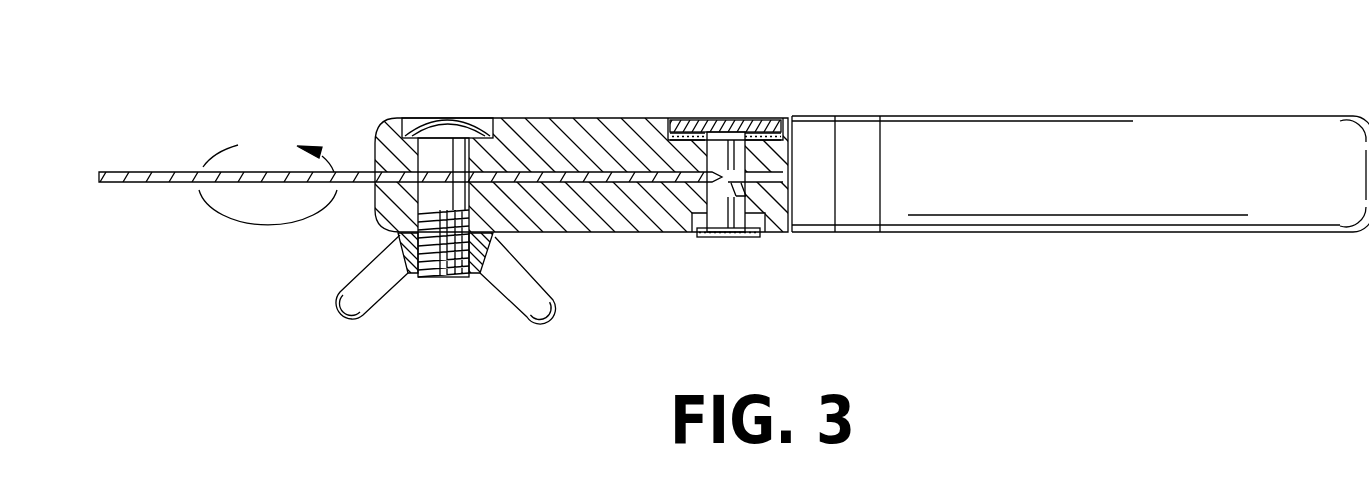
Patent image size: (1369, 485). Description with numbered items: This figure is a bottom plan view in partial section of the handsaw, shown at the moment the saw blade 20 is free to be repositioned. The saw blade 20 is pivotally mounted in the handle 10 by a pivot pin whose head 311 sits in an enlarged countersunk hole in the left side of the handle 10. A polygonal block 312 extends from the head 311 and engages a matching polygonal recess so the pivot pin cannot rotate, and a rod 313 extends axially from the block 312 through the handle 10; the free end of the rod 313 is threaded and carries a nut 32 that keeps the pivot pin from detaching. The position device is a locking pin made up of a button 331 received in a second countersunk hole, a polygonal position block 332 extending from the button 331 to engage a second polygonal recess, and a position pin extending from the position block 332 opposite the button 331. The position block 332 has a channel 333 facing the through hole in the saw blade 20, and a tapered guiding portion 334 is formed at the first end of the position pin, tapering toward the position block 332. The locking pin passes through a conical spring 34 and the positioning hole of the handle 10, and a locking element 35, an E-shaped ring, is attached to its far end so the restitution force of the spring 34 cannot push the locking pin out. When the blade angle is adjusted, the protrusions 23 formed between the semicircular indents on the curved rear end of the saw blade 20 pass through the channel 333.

The handle 10 is at (1063, 124).
The saw blade 20 is at (287, 175).
The protrusion 23 is at (722, 232).
The nut 32 is at (517, 282).
The spring 34 is at (790, 118).
The locking element 35 is at (753, 237).
The head 311 is at (457, 130).
The block 312 is at (437, 152).
The rod 313 is at (455, 188).
The button 331 is at (758, 118).
The position block 332 is at (705, 100).
The channel 333 is at (717, 173).
The tapered guiding portion 334 is at (742, 188).